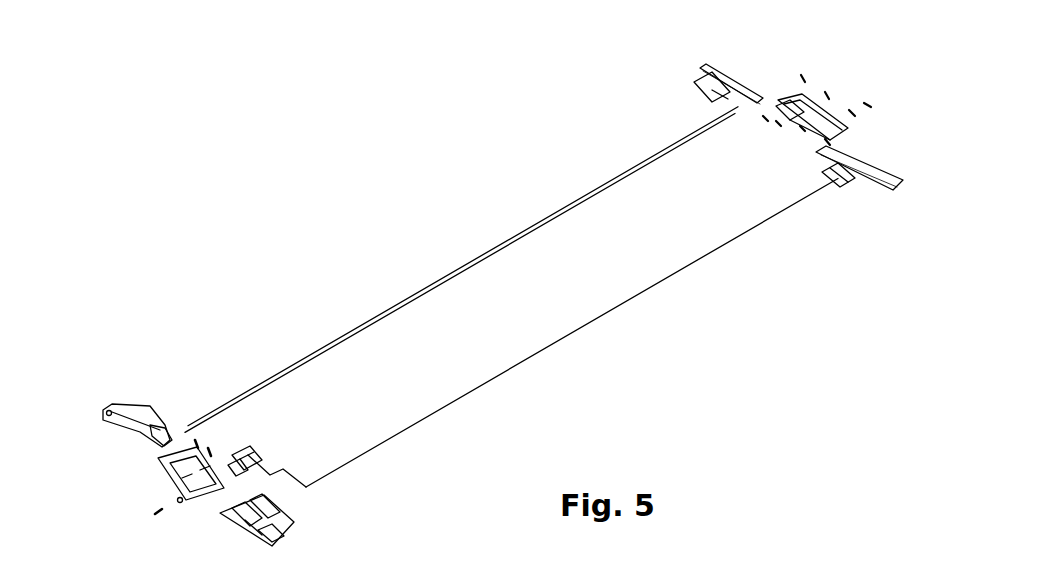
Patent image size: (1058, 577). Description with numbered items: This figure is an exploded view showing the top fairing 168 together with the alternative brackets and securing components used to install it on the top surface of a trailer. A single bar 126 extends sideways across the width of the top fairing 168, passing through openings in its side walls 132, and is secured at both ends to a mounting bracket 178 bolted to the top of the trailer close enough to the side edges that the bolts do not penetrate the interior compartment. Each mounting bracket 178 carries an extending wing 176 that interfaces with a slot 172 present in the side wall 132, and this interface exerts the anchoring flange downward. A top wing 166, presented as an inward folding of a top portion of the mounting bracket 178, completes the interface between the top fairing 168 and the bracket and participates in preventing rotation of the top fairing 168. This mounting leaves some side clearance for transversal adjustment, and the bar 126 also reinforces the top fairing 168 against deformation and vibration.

The top fairing 168 is at (355, 229).
The side wall 132 is at (265, 461).
The bar 126 is at (247, 463).
The extending wing 176 is at (149, 408).
The top wing 166 is at (153, 425).
The slot 172 is at (225, 445).
The mounting bracket 178 is at (178, 475).